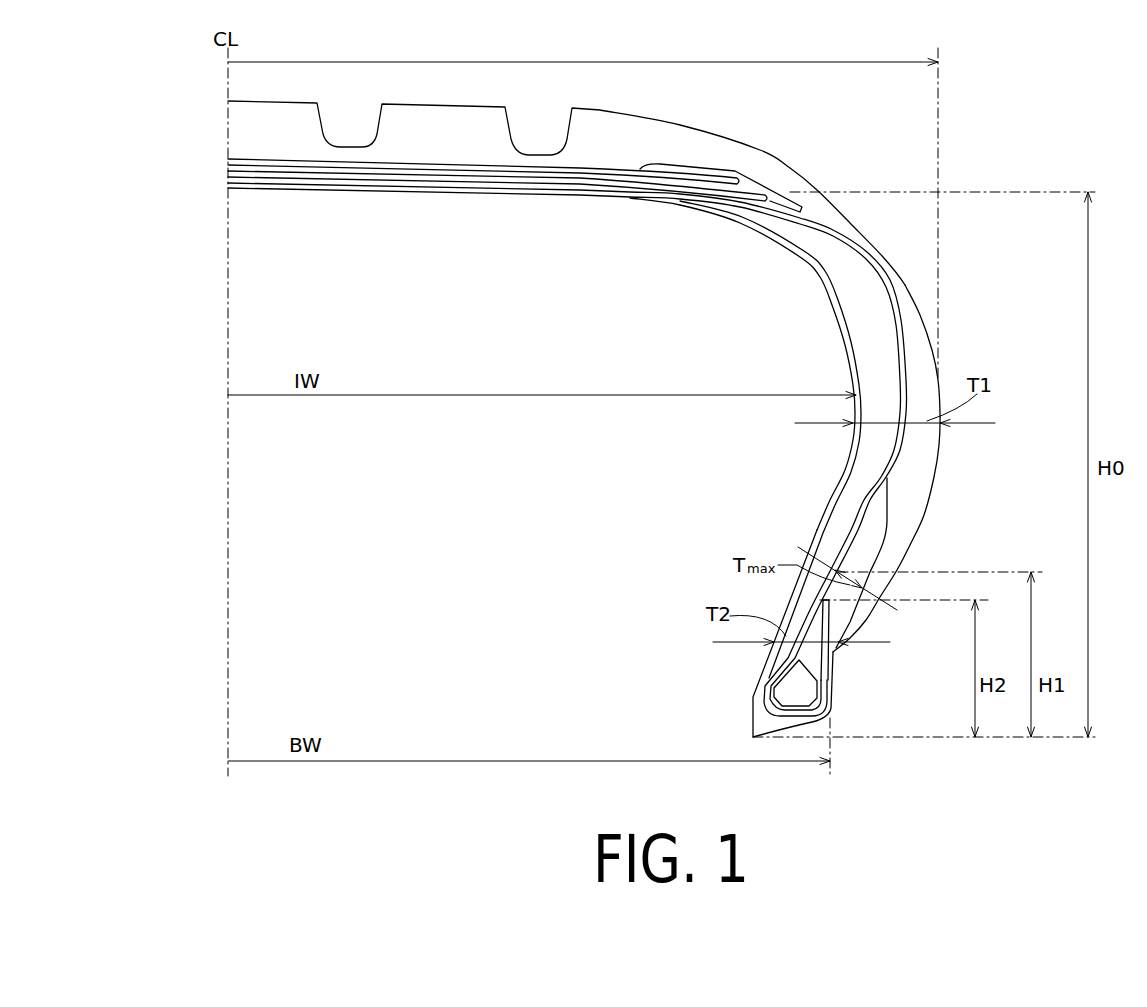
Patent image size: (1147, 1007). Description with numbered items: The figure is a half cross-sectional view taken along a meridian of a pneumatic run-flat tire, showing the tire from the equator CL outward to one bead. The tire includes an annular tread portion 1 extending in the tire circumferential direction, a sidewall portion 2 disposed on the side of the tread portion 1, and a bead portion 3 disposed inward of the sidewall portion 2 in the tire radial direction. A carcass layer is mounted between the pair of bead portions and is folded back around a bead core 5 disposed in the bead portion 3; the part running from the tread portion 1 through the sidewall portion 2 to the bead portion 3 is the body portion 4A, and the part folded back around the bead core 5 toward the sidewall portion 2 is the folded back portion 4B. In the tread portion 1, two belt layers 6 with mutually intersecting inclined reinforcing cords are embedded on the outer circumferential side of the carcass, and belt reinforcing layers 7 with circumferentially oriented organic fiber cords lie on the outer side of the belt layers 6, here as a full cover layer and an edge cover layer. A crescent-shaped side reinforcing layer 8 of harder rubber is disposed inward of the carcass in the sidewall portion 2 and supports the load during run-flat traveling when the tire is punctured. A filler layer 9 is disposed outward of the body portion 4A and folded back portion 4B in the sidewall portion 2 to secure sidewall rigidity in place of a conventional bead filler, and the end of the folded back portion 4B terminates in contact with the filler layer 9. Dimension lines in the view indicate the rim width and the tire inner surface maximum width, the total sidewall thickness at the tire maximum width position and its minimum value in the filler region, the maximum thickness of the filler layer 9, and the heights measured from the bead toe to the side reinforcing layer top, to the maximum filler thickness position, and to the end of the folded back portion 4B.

The tread portion 1 is at (278, 85).
The sidewall portion 2 is at (960, 476).
The bead portion 3 is at (851, 704).
The body portion 4A is at (773, 673).
The folded back portion 4B is at (822, 666).
The bead core 5 is at (791, 690).
The belt layers 6 is at (342, 174).
The belt reinforcing layers 7 is at (663, 176).
The side reinforcing layer 8 is at (850, 323).
The filler layer 9 is at (873, 535).